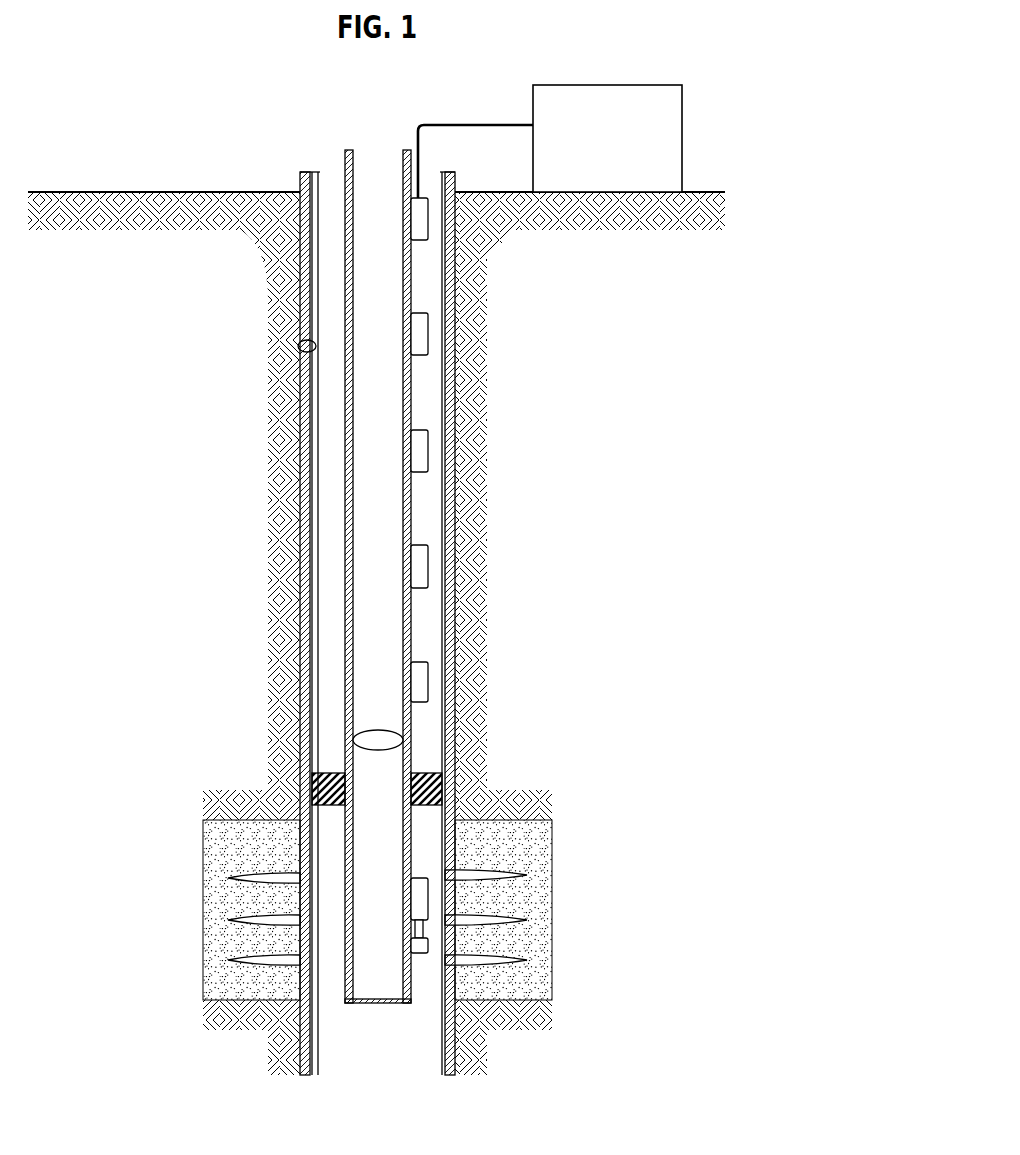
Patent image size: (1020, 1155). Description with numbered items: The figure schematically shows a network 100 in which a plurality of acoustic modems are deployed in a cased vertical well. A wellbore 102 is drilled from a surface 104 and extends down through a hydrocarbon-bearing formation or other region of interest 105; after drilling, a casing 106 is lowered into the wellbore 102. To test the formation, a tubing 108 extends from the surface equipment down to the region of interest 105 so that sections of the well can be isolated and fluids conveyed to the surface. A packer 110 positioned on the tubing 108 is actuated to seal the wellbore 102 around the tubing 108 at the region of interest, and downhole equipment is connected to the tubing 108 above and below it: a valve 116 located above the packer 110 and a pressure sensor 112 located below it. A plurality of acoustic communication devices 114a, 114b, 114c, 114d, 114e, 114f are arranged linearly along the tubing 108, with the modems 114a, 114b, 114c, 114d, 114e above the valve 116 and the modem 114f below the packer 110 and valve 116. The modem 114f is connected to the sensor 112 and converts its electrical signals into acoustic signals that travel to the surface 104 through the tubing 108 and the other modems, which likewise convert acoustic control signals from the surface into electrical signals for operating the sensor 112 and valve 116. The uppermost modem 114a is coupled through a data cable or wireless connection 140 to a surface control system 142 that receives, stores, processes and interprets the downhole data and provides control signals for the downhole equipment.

The network 100 is at (219, 114).
The wellbore 102 is at (300, 345).
The surface 104 is at (127, 192).
The region of interest 105 is at (270, 858).
The casing 106 is at (299, 397).
The tubing 108 is at (345, 457).
The packer 110 is at (445, 790).
The pressure sensor 112 is at (422, 947).
The acoustic communication device 114a is at (424, 231).
The acoustic communication device 114b is at (421, 330).
The acoustic communication device 114c is at (421, 452).
The acoustic communication device 114d is at (421, 563).
The acoustic communication device 114e is at (421, 680).
The acoustic communication device 114f is at (422, 902).
The valve 116 is at (362, 737).
The data cable or wireless connection 140 is at (482, 124).
The surface control system 142 is at (628, 85).